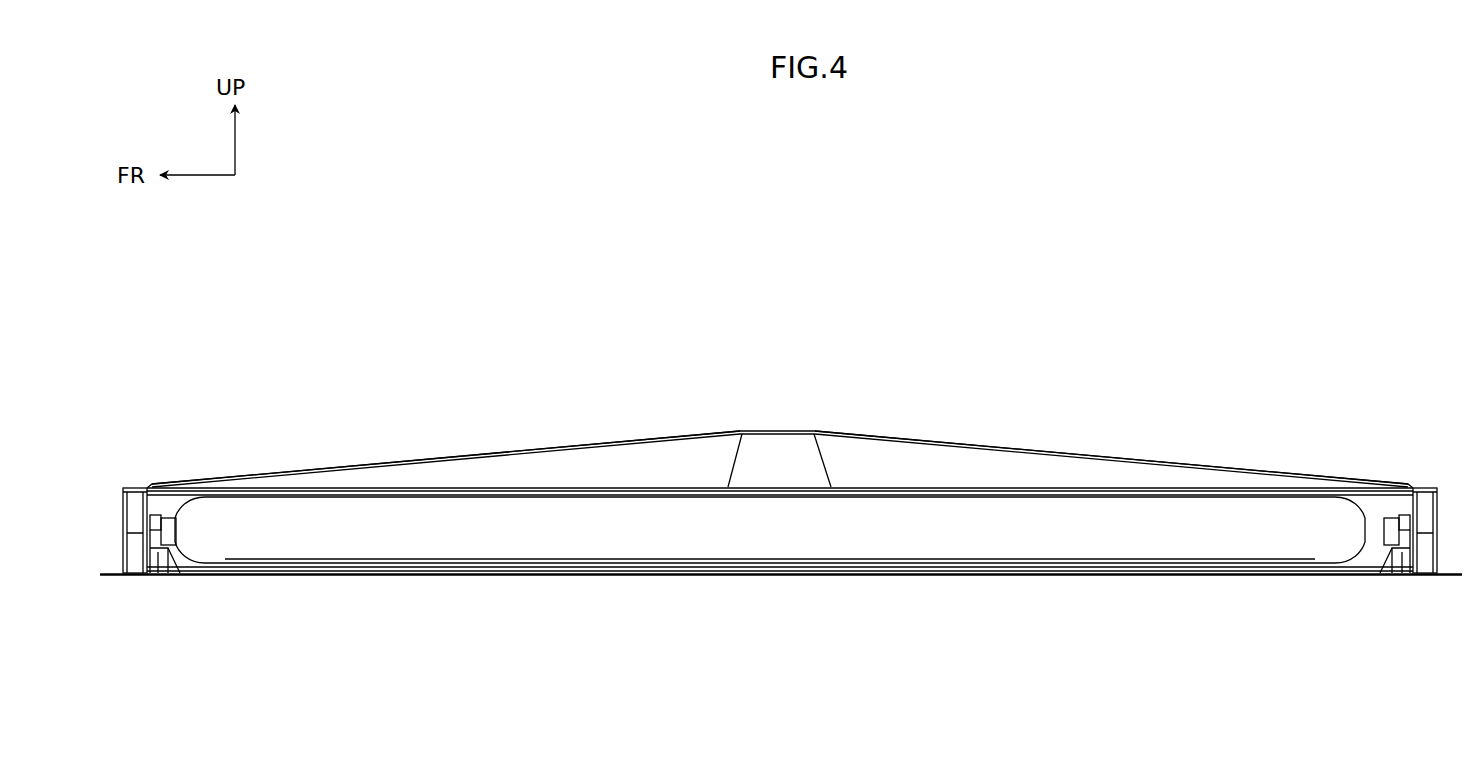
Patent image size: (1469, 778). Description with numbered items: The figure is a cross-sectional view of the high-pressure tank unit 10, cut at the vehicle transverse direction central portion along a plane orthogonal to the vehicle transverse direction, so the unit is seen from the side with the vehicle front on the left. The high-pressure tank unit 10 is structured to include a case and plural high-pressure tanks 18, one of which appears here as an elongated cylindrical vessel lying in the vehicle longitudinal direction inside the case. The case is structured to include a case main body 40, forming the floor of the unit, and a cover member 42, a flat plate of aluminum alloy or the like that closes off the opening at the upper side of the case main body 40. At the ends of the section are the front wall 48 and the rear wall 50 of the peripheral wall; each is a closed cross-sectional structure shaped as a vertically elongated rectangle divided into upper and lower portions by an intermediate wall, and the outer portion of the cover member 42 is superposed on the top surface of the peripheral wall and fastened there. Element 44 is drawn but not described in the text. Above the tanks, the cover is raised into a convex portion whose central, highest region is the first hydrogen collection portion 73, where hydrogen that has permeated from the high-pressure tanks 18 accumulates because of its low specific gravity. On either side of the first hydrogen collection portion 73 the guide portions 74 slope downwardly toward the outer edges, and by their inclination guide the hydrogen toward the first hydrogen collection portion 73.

The high-pressure tank unit 10 is at (1090, 305).
The high-pressure tank 18 is at (800, 541).
The case main body 40 is at (938, 578).
The cover member 42 is at (950, 442).
The intermediate plate 44 is at (732, 578).
The front wall 48 is at (118, 489).
The rear wall 50 is at (1437, 518).
The first hydrogen collection portion 73 is at (775, 430).
The guide portion 74 is at (548, 452).